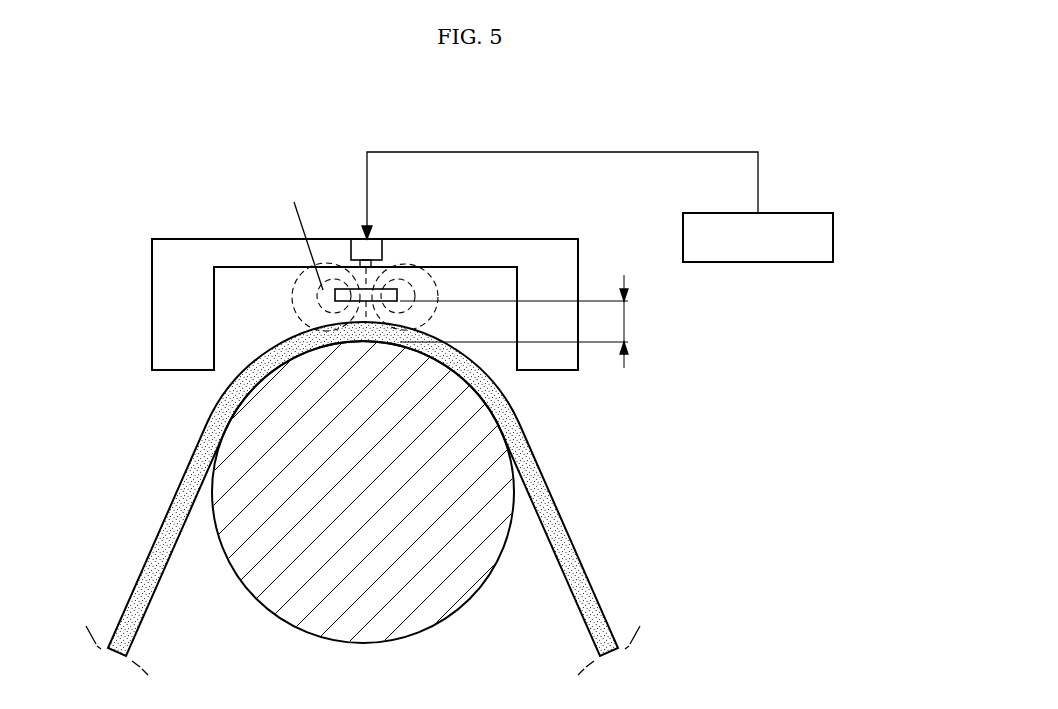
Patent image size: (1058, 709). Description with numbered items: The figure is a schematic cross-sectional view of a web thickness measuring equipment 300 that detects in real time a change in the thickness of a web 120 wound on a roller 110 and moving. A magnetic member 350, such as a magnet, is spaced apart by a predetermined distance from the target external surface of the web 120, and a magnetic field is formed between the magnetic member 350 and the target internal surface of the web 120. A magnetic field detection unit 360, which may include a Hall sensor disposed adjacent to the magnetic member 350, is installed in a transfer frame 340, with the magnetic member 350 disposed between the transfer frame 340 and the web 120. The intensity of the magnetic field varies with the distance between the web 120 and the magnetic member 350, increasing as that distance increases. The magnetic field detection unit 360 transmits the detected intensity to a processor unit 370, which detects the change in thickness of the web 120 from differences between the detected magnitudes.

The web thickness measuring equipment 300 is at (92, 128).
The roller 110 is at (447, 602).
The web 120 is at (568, 538).
The transfer frame 340 is at (203, 239).
The magnetic member 350 is at (400, 298).
The magnetic field detection unit 360 is at (382, 249).
The processor unit 370 is at (833, 238).